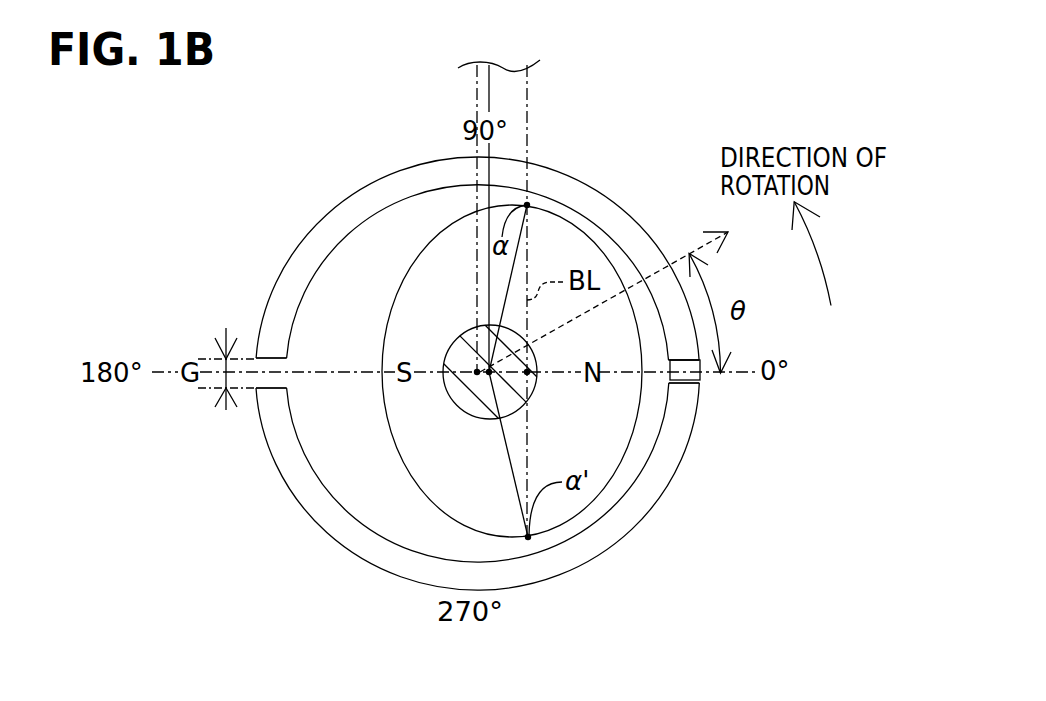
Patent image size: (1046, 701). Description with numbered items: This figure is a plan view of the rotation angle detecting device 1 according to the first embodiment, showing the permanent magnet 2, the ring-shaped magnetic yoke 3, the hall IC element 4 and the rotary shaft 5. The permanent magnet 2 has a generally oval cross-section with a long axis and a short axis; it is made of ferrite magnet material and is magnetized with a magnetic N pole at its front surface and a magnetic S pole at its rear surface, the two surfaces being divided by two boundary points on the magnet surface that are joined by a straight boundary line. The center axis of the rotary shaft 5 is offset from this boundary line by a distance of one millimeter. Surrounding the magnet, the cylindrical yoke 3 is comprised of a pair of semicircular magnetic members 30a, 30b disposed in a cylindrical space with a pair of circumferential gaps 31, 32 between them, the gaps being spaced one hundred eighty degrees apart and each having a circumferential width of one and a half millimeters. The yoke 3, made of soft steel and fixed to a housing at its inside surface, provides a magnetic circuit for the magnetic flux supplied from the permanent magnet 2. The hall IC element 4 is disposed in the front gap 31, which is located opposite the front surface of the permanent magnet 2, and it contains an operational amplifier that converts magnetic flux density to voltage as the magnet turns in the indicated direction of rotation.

The rotation angle detecting device 1 is at (665, 123).
The permanent magnet 2 is at (563, 240).
The magnetic yoke 3 is at (378, 192).
The hall IC element 4 is at (678, 365).
The rotary shaft 5 is at (458, 339).
The semicircular magnetic member 30a is at (530, 173).
The semicircular magnetic member 30b is at (573, 552).
The front gap 31 is at (685, 383).
The circumferential gap 32 is at (267, 377).